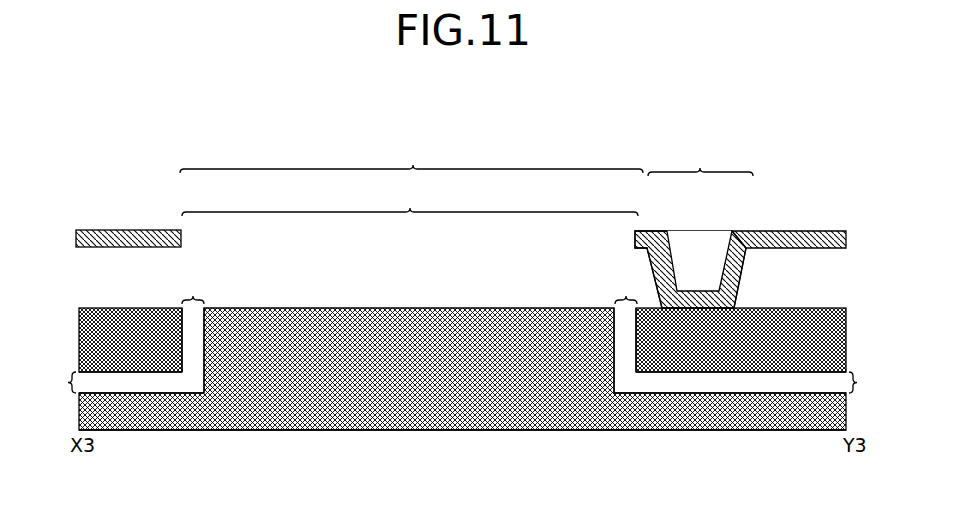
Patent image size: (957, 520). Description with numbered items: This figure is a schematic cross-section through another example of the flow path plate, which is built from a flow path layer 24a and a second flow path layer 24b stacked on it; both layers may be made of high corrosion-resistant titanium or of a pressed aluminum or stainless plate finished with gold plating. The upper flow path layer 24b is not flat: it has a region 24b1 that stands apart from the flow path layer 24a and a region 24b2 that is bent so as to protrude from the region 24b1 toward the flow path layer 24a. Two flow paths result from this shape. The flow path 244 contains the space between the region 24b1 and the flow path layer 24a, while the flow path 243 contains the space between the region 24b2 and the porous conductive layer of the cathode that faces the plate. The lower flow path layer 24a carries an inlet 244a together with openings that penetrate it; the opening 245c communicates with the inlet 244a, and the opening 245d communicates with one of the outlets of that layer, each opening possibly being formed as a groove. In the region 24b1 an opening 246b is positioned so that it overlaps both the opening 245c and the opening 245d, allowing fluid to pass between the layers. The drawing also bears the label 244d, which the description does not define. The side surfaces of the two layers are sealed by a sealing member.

The flow path layer 24a is at (489, 422).
The flow path layer 24b is at (387, 146).
The region 24b1 is at (411, 158).
The region 24b2 is at (700, 162).
The flow path 243 is at (693, 257).
The flow path 244 is at (155, 272).
The inlet 244a is at (763, 383).
The second cavity 244d is at (107, 383).
The opening 245c is at (626, 332).
The opening 245d is at (192, 332).
The opening 246b is at (410, 201).